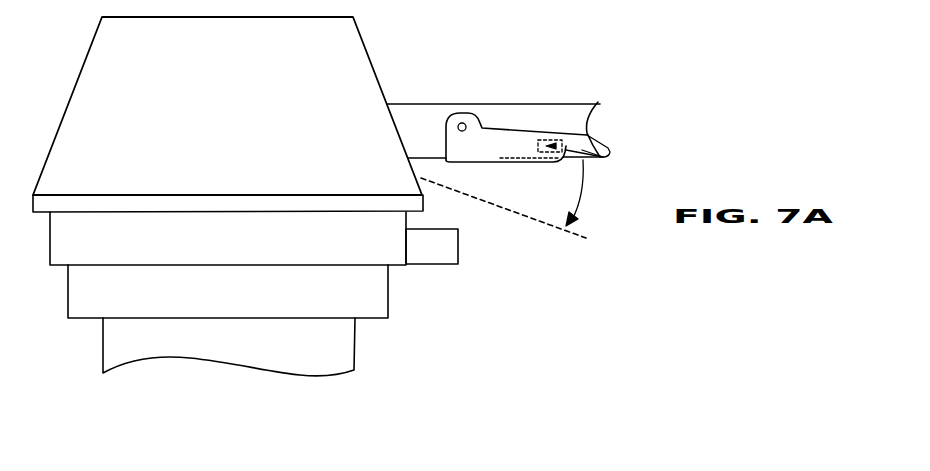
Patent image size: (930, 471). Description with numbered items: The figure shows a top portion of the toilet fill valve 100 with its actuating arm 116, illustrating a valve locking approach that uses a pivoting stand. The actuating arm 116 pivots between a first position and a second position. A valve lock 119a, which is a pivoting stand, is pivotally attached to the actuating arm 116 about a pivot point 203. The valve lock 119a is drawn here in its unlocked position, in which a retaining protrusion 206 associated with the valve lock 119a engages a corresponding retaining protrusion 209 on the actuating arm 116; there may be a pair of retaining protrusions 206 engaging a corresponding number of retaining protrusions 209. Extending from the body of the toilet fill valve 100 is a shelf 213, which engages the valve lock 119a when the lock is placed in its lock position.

The toilet fill valve 100 is at (584, 305).
The actuating arm 116 is at (573, 118).
The valve lock 119a is at (498, 138).
The pivot point 203 is at (460, 122).
The retaining protrusion 206 is at (590, 135).
The retaining protrusion 209 is at (580, 150).
The shelf 213 is at (443, 252).